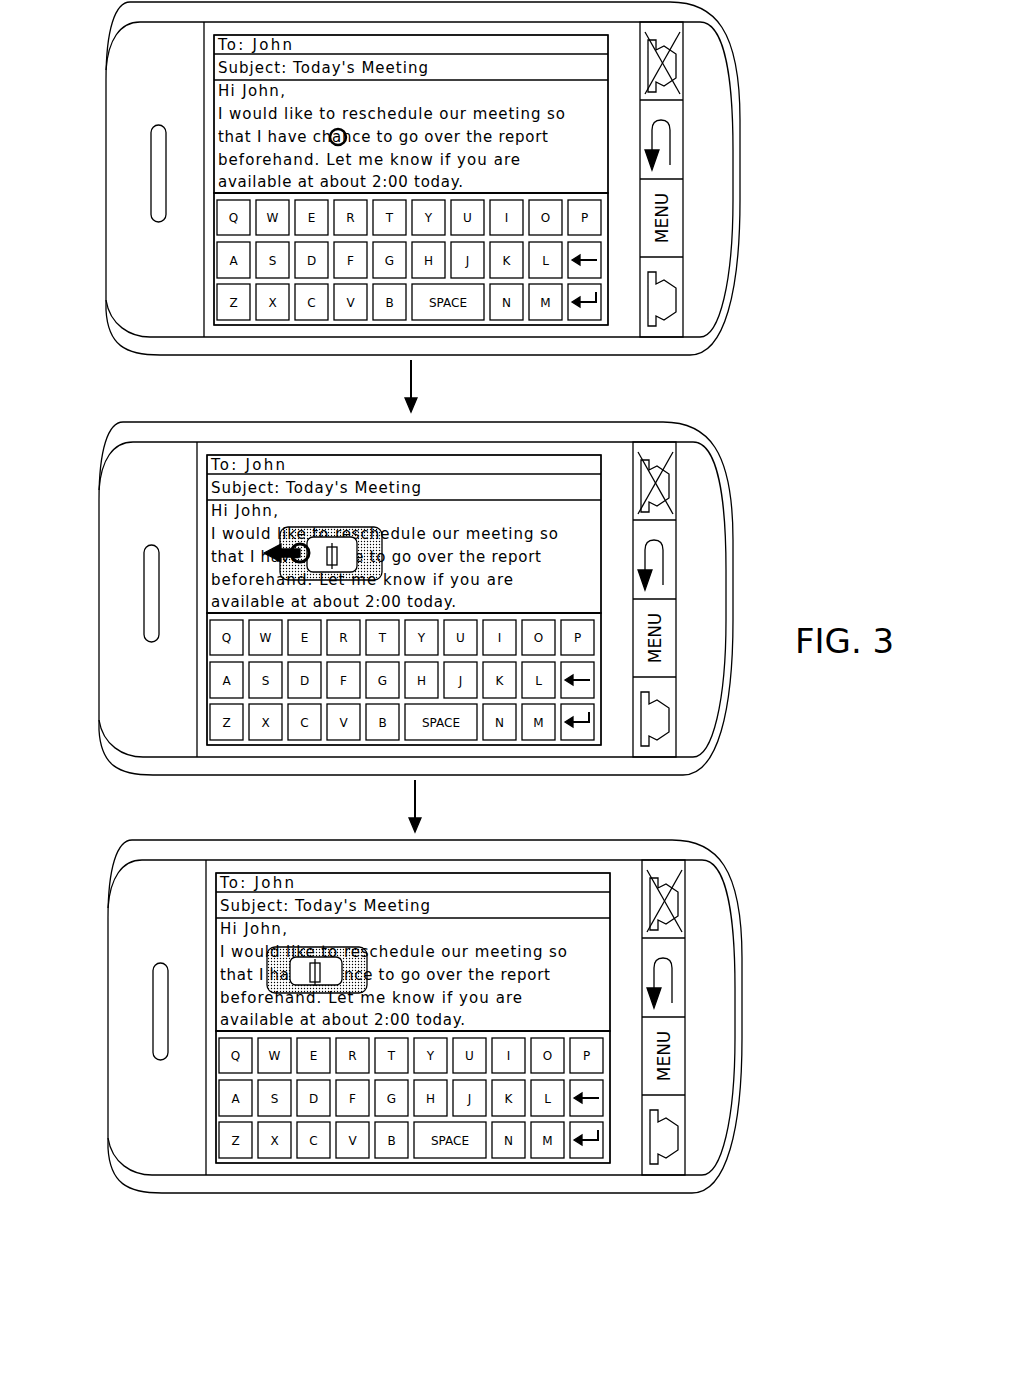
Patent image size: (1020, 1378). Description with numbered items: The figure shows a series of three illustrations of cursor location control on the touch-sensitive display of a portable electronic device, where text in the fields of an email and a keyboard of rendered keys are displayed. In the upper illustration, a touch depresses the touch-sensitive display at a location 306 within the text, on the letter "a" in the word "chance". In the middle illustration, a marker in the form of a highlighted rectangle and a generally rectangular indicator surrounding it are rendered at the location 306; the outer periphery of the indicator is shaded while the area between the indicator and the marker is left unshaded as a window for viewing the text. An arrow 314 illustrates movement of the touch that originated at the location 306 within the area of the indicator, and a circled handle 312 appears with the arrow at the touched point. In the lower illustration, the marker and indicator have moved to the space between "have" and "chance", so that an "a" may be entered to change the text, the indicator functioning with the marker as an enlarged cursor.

The location 306 is at (331, 131).
The selection handle 312 is at (292, 551).
The arrow 314 is at (264, 553).